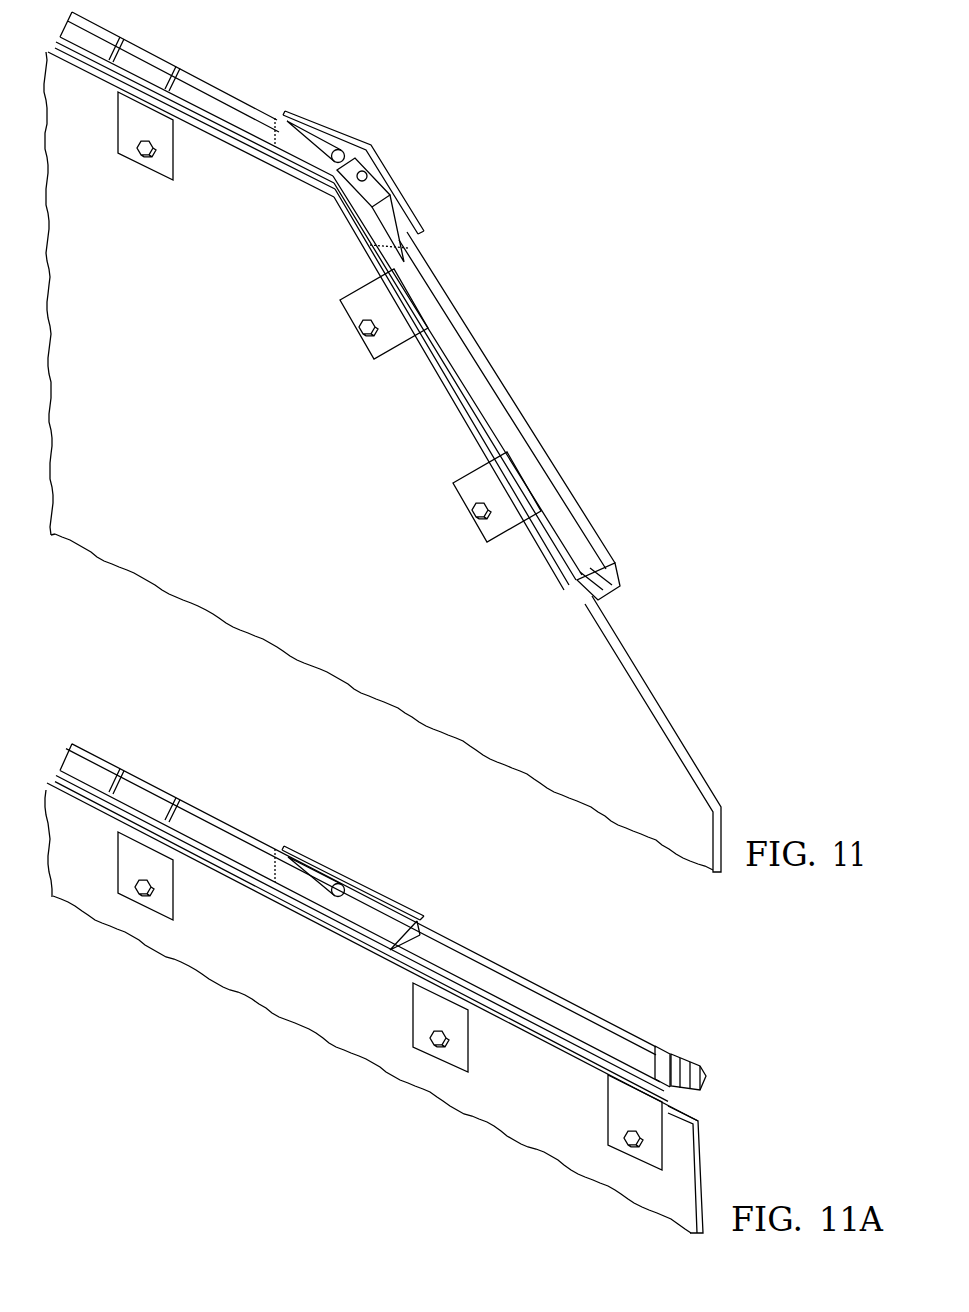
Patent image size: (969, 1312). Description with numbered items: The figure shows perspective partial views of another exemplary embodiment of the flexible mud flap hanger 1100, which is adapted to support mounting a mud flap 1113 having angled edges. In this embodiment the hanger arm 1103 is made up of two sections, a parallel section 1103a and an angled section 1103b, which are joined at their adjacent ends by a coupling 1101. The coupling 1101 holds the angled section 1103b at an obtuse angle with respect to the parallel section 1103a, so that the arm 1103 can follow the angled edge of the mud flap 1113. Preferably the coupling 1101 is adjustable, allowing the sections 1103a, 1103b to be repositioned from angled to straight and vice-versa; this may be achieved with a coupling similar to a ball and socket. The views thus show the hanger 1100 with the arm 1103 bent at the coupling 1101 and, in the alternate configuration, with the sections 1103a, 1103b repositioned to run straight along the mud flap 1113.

In FIG. 11, the hanger 1100 is at (337, 306).
In FIG. 11A, the hanger 1100 is at (380, 957).
In FIG. 11, the coupling 1101 is at (352, 153).
In FIG. 11A, the coupling 1101 is at (348, 885).
In FIG. 11, the hanger arm 1103 is at (337, 306).
In FIG. 11A, the hanger arm 1103 is at (380, 923).
In FIG. 11, the parallel section 1103a is at (284, 89).
In FIG. 11A, the parallel section 1103a is at (280, 826).
In FIG. 11, the angled section 1103b is at (507, 395).
In FIG. 11A, the angled section 1103b is at (531, 988).
In FIG. 11, the mud flap 1113 is at (263, 393).
In FIG. 11A, the mud flap 1113 is at (356, 997).